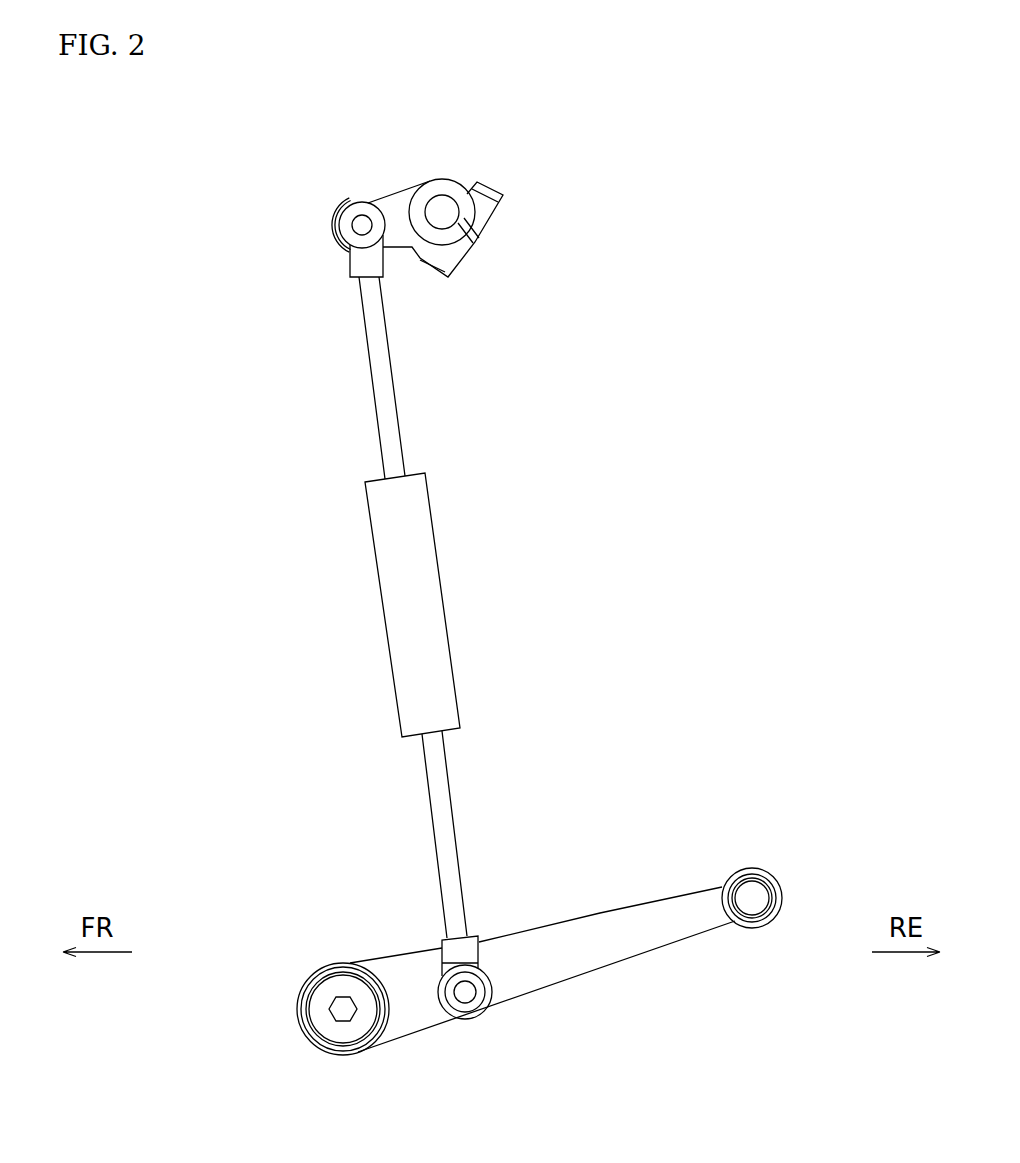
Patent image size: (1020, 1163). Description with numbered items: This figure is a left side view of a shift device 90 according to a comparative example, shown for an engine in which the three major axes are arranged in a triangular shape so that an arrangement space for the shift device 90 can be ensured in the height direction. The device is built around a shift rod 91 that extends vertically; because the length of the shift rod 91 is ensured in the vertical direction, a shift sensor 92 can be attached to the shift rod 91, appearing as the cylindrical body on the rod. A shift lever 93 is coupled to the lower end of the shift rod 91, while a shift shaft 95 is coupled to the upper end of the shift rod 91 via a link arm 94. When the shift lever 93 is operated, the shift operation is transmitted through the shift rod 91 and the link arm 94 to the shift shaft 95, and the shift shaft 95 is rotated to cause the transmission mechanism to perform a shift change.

The shift device 90 is at (286, 229).
The shift rod 91 is at (393, 367).
The shift sensor 92 is at (443, 585).
The shift lever 93 is at (540, 1017).
The link arm 94 is at (408, 187).
The shift shaft 95 is at (447, 207).